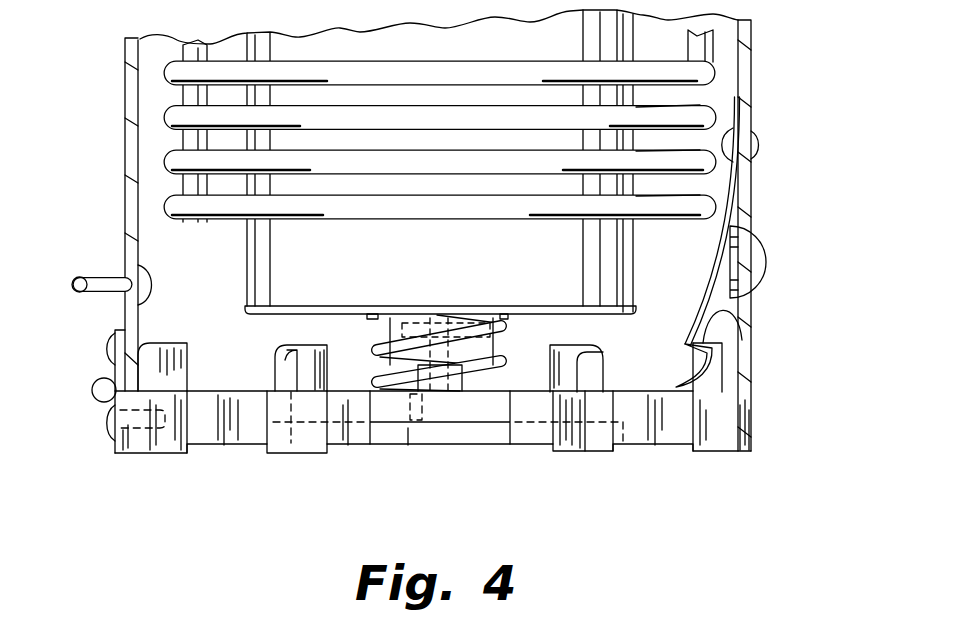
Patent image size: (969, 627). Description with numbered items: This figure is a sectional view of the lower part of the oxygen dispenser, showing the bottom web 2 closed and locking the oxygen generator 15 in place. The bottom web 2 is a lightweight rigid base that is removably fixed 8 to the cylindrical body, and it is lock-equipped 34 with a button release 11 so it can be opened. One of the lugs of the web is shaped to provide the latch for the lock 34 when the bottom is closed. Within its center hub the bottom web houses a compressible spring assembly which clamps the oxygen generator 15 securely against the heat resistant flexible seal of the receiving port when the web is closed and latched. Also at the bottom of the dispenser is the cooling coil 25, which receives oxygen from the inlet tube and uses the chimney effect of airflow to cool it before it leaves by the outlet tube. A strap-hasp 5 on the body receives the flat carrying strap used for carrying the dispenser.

The bottom web 2 is at (433, 236).
The strap-hasp 5 is at (82, 297).
The removable fixing of the bottom web 8 is at (88, 380).
The button release 11 is at (773, 246).
The oxygen generator 15 is at (236, 260).
The cooling coil 25 is at (726, 70).
The lock 34 is at (718, 370).